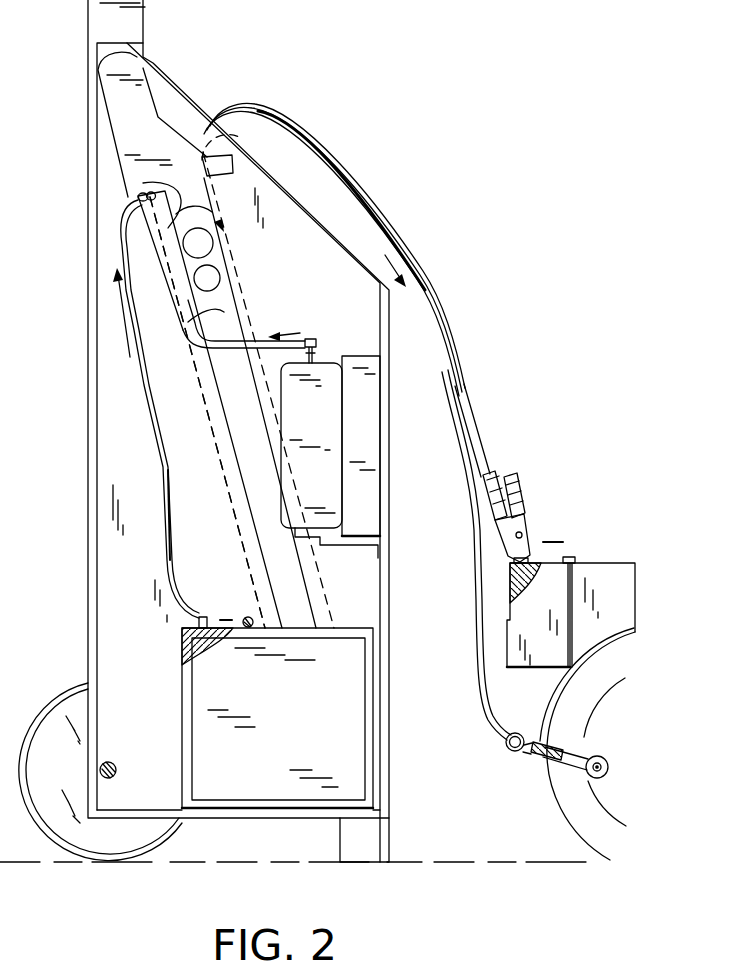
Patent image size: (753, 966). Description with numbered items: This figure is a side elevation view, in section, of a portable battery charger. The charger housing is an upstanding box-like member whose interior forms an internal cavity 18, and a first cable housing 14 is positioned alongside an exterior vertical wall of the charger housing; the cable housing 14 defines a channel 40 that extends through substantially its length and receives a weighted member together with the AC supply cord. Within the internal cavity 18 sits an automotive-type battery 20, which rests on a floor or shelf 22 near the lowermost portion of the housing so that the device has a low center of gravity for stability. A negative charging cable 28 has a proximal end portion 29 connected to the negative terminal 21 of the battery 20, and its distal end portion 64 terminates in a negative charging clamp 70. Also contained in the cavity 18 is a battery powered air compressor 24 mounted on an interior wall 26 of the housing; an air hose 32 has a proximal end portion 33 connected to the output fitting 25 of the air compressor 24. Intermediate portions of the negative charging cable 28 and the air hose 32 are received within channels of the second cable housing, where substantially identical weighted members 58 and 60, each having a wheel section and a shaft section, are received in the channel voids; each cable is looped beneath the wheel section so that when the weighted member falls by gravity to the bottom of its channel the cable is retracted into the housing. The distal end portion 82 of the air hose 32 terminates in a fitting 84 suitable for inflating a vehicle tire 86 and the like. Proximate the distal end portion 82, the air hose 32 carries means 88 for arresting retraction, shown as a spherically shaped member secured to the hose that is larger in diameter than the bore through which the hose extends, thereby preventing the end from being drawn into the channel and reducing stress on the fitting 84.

The first cable housing 14 is at (180, 256).
The internal cavity 18 is at (138, 450).
The battery 20 is at (182, 738).
The negative terminal 21 is at (210, 616).
The shelf 22 is at (157, 808).
The air compressor 24 is at (333, 362).
The output fitting 25 is at (318, 340).
The interior wall 26 is at (375, 320).
The negative charging cable 28 is at (283, 133).
The proximal end portion 29 is at (199, 611).
The air hose 32 is at (476, 583).
The proximal end portion 33 is at (258, 340).
The channel 40 is at (316, 568).
The weighted member 58 is at (143, 183).
The weighted member 60 is at (180, 330).
The distal end portion 64 is at (488, 476).
The negative charging clamp 70 is at (525, 528).
The distal end portion 82 is at (504, 736).
The fitting 84 is at (560, 765).
The vehicle tire 86 is at (575, 802).
The retraction arresting means 88 is at (517, 732).